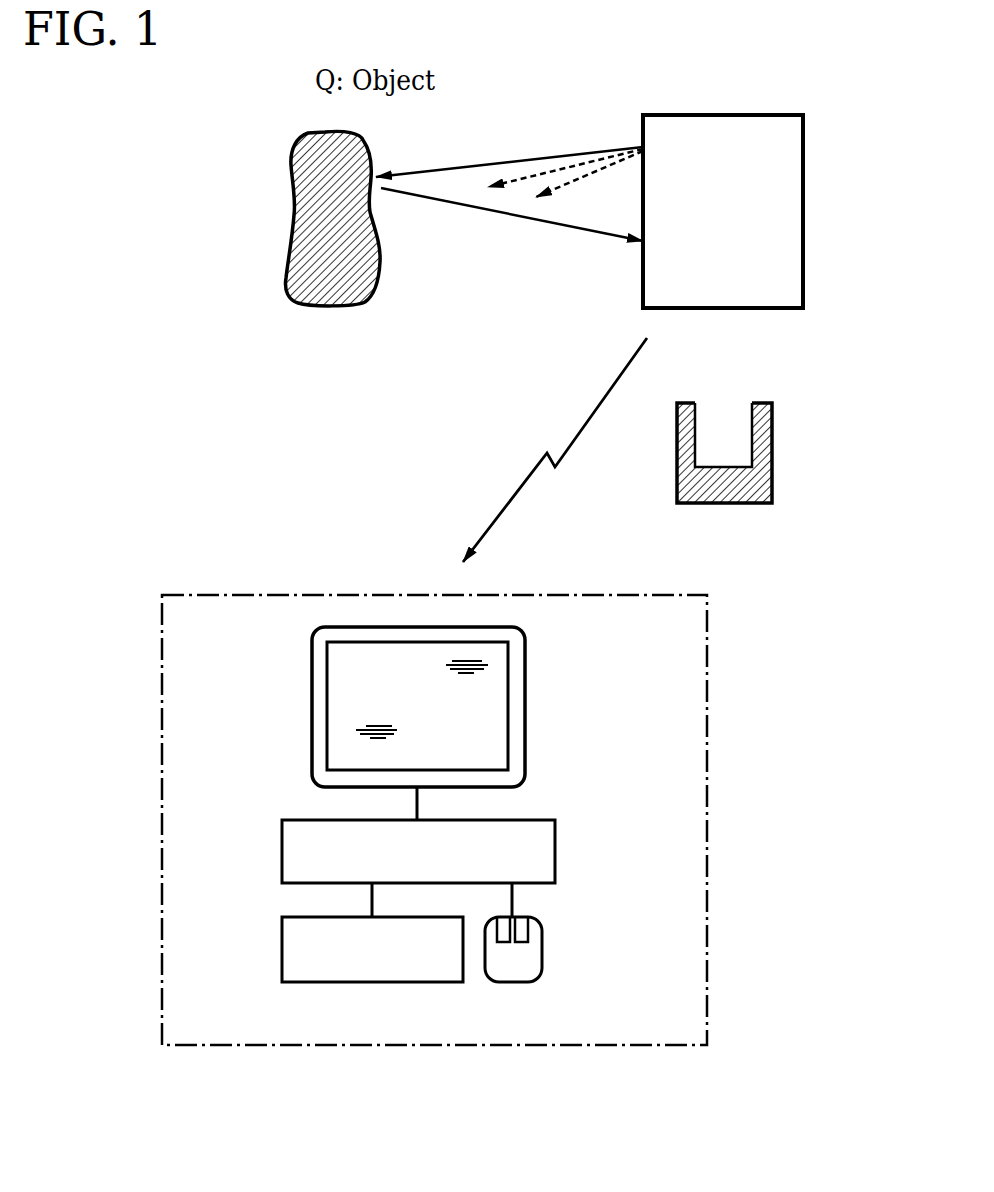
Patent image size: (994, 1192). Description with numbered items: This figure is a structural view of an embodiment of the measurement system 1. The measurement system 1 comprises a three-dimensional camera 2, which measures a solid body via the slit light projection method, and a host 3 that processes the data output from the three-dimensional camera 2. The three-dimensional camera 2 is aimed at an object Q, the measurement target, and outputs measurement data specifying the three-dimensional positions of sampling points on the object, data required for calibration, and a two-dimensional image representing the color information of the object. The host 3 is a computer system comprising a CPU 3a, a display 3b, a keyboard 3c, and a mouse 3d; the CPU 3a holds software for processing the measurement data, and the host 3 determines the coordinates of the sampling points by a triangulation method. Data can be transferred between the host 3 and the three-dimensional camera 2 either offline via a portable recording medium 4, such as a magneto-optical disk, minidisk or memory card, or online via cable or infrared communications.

The measurement system 1 is at (248, 459).
The three-dimensional camera 2 is at (707, 115).
The host 3 is at (277, 595).
The CPU 3a is at (555, 858).
The display 3b is at (525, 698).
The keyboard 3c is at (282, 954).
The mouse 3d is at (542, 953).
The recording medium 4 is at (772, 437).